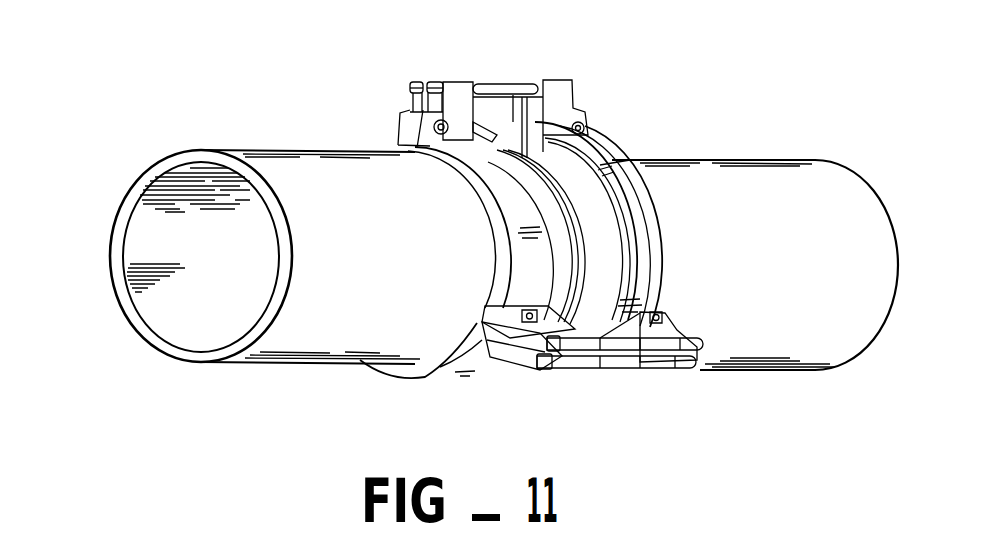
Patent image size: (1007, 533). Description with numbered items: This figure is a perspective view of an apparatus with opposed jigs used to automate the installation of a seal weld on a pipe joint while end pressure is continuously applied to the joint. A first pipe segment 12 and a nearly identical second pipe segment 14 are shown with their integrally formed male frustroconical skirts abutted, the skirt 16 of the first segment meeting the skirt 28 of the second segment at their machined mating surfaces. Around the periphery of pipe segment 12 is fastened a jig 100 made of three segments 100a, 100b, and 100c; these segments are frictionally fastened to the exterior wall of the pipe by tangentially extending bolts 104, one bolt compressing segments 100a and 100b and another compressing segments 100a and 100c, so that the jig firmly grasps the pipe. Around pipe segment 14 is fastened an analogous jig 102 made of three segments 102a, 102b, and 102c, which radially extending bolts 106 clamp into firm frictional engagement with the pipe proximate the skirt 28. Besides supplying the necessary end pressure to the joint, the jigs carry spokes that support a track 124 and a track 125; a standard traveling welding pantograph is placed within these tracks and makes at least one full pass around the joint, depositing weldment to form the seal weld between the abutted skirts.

The first pipe segment 12 is at (288, 372).
The second pipe segment 14 is at (760, 370).
The male frustroconical skirt 16 is at (565, 233).
The male frustroconical skirt 28 is at (580, 262).
The jig 100 is at (483, 271).
The jig segment 100a is at (490, 203).
The jig segment 100b is at (445, 380).
The jig segment 100c is at (400, 140).
The jig 102 is at (677, 287).
The jig segment 102a is at (653, 200).
The jig segment 102b is at (582, 372).
The jig segment 102c is at (548, 115).
The tangentially extending bolts 104 is at (415, 122).
The radially extending bolts 106 is at (588, 122).
The track 124 is at (487, 128).
The track 125 is at (606, 165).